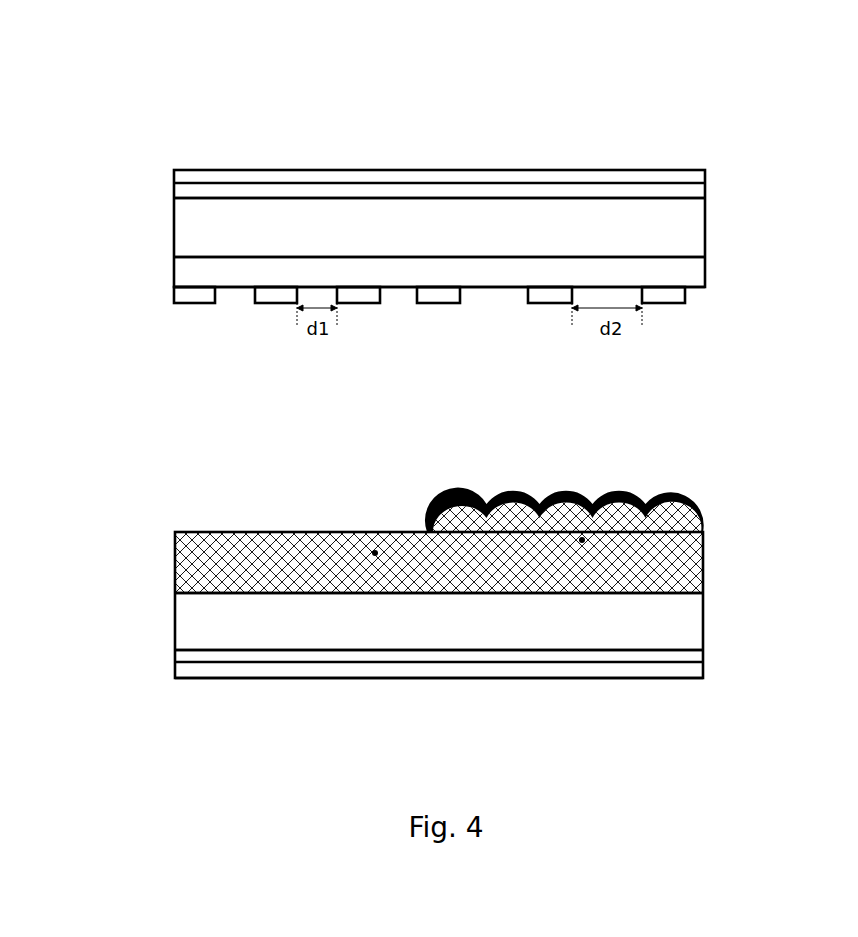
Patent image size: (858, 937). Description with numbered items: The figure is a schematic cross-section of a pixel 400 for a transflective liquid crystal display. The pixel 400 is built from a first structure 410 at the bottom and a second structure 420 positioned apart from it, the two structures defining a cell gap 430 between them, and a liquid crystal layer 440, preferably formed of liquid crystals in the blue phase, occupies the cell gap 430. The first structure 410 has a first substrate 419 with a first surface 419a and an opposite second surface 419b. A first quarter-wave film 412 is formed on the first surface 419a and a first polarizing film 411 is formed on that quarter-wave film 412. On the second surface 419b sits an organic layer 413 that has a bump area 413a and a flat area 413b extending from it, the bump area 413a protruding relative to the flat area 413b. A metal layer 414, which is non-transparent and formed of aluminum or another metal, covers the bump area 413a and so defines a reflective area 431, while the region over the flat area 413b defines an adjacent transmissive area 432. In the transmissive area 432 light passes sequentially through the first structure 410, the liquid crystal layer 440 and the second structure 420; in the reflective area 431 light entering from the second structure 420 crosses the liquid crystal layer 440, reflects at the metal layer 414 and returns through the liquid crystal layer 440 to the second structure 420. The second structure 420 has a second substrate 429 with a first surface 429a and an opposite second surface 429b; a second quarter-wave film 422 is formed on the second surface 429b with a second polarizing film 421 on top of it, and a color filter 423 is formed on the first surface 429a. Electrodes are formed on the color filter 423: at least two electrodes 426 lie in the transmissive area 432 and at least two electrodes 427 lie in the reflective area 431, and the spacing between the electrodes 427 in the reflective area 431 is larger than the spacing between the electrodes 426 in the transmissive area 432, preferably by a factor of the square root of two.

The pixel 400 is at (453, 45).
The first structure 410 is at (143, 504).
The first PF 411 is at (688, 672).
The first quarter-wave film 412 is at (683, 658).
The organic layer 413 is at (687, 573).
The bump area 413a is at (582, 540).
The flat area 413b is at (375, 553).
The metal layer 414 is at (690, 507).
The first substrate 419 is at (683, 613).
The first surface of the first substrate 419a is at (300, 652).
The second surface of the first substrate 419b is at (238, 594).
The second structure 420 is at (143, 169).
The second PF 421 is at (687, 166).
The second quarter-wave film 422 is at (687, 191).
The color filter 423 is at (687, 273).
The first spacer pattern 426 is at (200, 304).
The second spacer pattern 427 is at (541, 304).
The second substrate 429 is at (687, 229).
The first surface of the second substrate 429a is at (220, 263).
The second surface of the second substrate 429b is at (330, 200).
The cell gap 430 is at (143, 327).
The reflective area 431 is at (700, 156).
The transmissive area 432 is at (174, 157).
The liquid crystal layer 440 is at (650, 425).